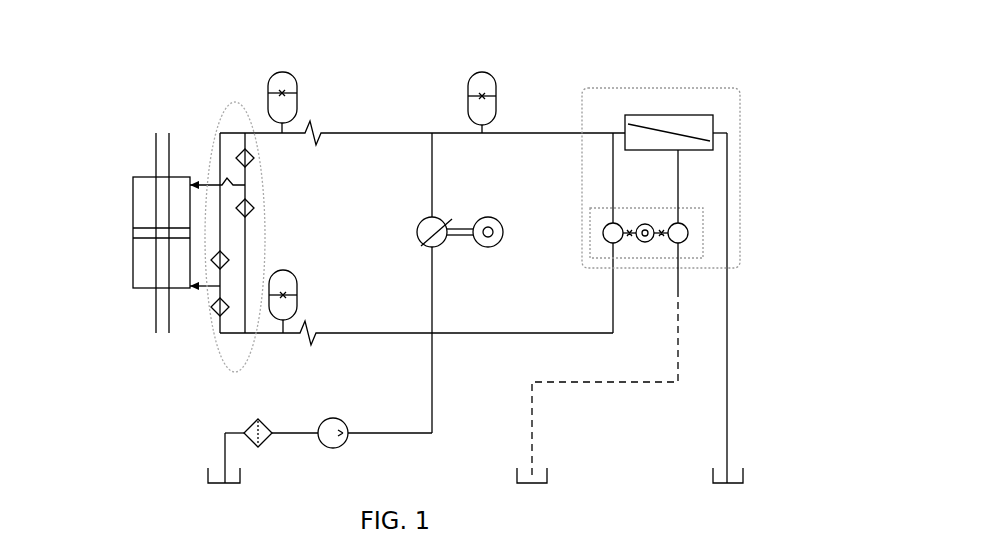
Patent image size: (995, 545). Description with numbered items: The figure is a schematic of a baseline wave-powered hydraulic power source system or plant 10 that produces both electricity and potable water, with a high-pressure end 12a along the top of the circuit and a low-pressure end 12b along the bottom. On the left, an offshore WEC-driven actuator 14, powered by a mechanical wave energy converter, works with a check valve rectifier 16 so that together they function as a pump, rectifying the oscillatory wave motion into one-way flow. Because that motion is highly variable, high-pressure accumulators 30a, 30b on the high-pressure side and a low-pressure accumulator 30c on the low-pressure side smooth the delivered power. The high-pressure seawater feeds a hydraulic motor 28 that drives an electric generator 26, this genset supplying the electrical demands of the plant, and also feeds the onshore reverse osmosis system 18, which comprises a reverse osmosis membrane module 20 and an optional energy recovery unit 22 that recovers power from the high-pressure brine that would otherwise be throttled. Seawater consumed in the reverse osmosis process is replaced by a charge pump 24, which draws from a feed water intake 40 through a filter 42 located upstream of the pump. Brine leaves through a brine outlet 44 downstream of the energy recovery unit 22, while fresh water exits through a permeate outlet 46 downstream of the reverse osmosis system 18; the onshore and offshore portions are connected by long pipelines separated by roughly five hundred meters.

The hydraulic wave energy converter power source system 10 is at (770, 68).
The high-pressure end 12a is at (400, 120).
The low-pressure end 12b is at (210, 338).
The WEC-driven actuator 14 is at (177, 150).
The check valve rectifier 16 is at (267, 217).
The reverse osmosis system 18 is at (668, 87).
The reverse osmosis membrane module 20 is at (717, 121).
The energy recovery unit 22 is at (660, 212).
The charge pump 24 is at (344, 414).
The electric generator 26 is at (497, 250).
The hydraulic motor 28 is at (446, 209).
The high-pressure accumulator 30a is at (305, 84).
The high-pressure accumulator 30b is at (500, 104).
The low-pressure accumulator 30c is at (301, 289).
The feed water intake 40 is at (200, 474).
The filter 42 is at (262, 416).
The brine outlet 44 is at (508, 478).
The permeate outlet 46 is at (707, 476).